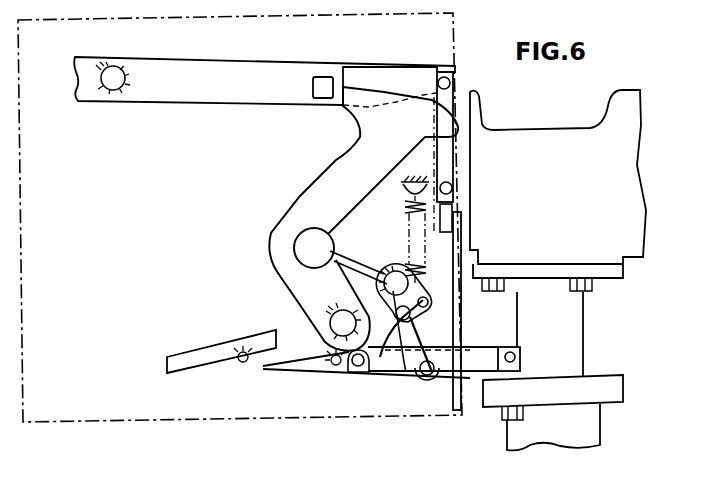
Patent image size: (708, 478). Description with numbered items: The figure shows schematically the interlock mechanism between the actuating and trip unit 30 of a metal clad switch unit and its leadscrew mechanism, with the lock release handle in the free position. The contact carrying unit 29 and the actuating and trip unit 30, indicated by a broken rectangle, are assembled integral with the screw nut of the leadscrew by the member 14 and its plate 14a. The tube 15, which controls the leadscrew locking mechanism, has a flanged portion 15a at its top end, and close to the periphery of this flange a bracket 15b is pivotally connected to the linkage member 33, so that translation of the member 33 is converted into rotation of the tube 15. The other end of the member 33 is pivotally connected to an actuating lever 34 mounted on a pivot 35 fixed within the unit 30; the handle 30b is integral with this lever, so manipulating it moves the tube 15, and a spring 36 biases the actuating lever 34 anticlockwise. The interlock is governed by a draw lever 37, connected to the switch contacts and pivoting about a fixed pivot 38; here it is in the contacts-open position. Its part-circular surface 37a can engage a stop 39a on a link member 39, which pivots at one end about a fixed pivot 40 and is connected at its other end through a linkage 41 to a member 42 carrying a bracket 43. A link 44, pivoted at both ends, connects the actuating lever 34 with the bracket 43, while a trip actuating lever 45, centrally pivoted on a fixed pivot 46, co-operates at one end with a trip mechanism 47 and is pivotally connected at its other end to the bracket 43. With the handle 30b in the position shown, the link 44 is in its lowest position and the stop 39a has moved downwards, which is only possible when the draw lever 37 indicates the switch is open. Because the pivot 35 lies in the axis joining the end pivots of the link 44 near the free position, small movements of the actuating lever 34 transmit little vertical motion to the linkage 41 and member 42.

The member 14 is at (583, 317).
The base plate 14a is at (622, 278).
The tube 15 is at (597, 428).
The flanged portion 15a is at (608, 382).
The bracket 15b is at (520, 366).
The contact carrying unit 29 is at (571, 210).
The actuating and trip unit 30 is at (144, 243).
The handle 30b is at (354, 260).
The linkage member 33 is at (489, 349).
The actuating lever 34 is at (380, 370).
The pivot 35 is at (396, 271).
The spring 36 is at (412, 223).
The draw lever 37 is at (318, 175).
The part-circular surface 37a is at (383, 91).
The pivot 38 is at (331, 324).
The link member 39 is at (236, 103).
The stop 39a is at (321, 80).
The fixed pivot 40 is at (116, 90).
The linkage 41 is at (452, 152).
The member 42 is at (453, 246).
The bracket 43 is at (430, 376).
The link 44 is at (425, 306).
The trip actuating lever 45 is at (404, 378).
The pivot 46 is at (340, 372).
The trip mechanism 47 is at (261, 349).